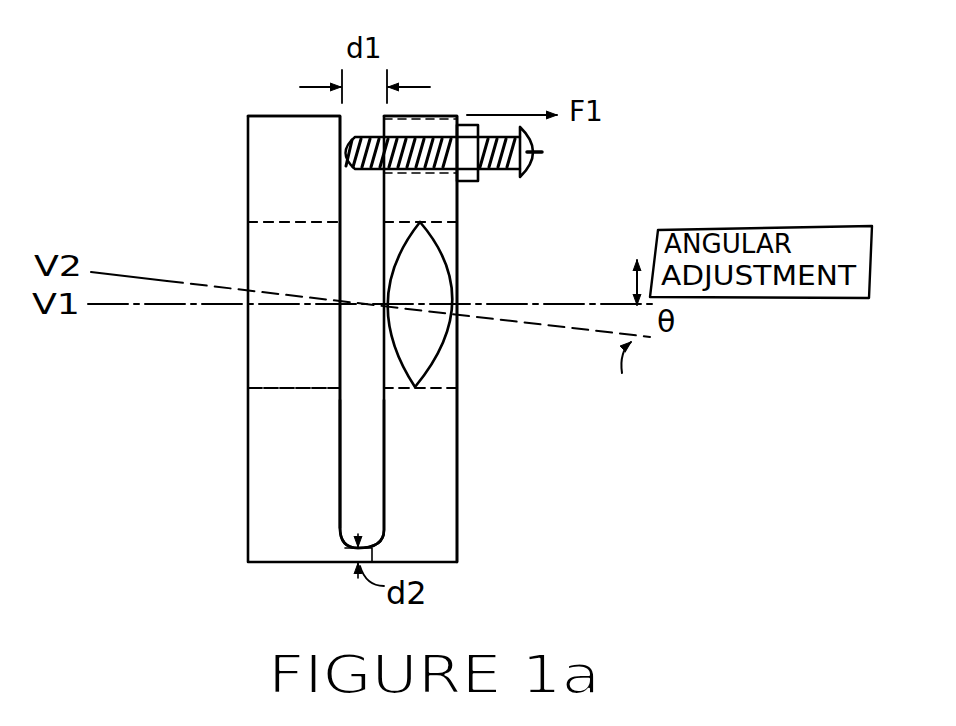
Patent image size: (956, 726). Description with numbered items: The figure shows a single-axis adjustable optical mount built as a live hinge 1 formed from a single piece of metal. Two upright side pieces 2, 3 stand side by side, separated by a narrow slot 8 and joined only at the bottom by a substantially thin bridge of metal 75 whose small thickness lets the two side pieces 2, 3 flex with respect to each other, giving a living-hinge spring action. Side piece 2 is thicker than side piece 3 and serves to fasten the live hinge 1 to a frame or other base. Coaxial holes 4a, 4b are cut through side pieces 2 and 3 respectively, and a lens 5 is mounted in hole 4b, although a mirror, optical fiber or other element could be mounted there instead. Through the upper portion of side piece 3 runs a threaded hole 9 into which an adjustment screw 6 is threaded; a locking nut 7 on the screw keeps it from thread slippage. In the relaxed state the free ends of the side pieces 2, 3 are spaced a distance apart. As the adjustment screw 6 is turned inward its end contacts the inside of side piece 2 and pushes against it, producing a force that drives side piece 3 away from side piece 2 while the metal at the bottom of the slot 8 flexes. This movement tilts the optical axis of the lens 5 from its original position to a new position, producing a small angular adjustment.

The live hinge 1 is at (150, 433).
The side piece 2 is at (245, 183).
The side piece 3 is at (460, 422).
The coaxial hole 4a is at (257, 373).
The coaxial hole 4b is at (443, 373).
The lens 5 is at (423, 262).
The adjustment screw 6 is at (548, 153).
The locking nut 7 is at (483, 183).
The slot 8 is at (360, 486).
The threaded hole 9 is at (437, 133).
The bridge of metal 75 is at (373, 552).